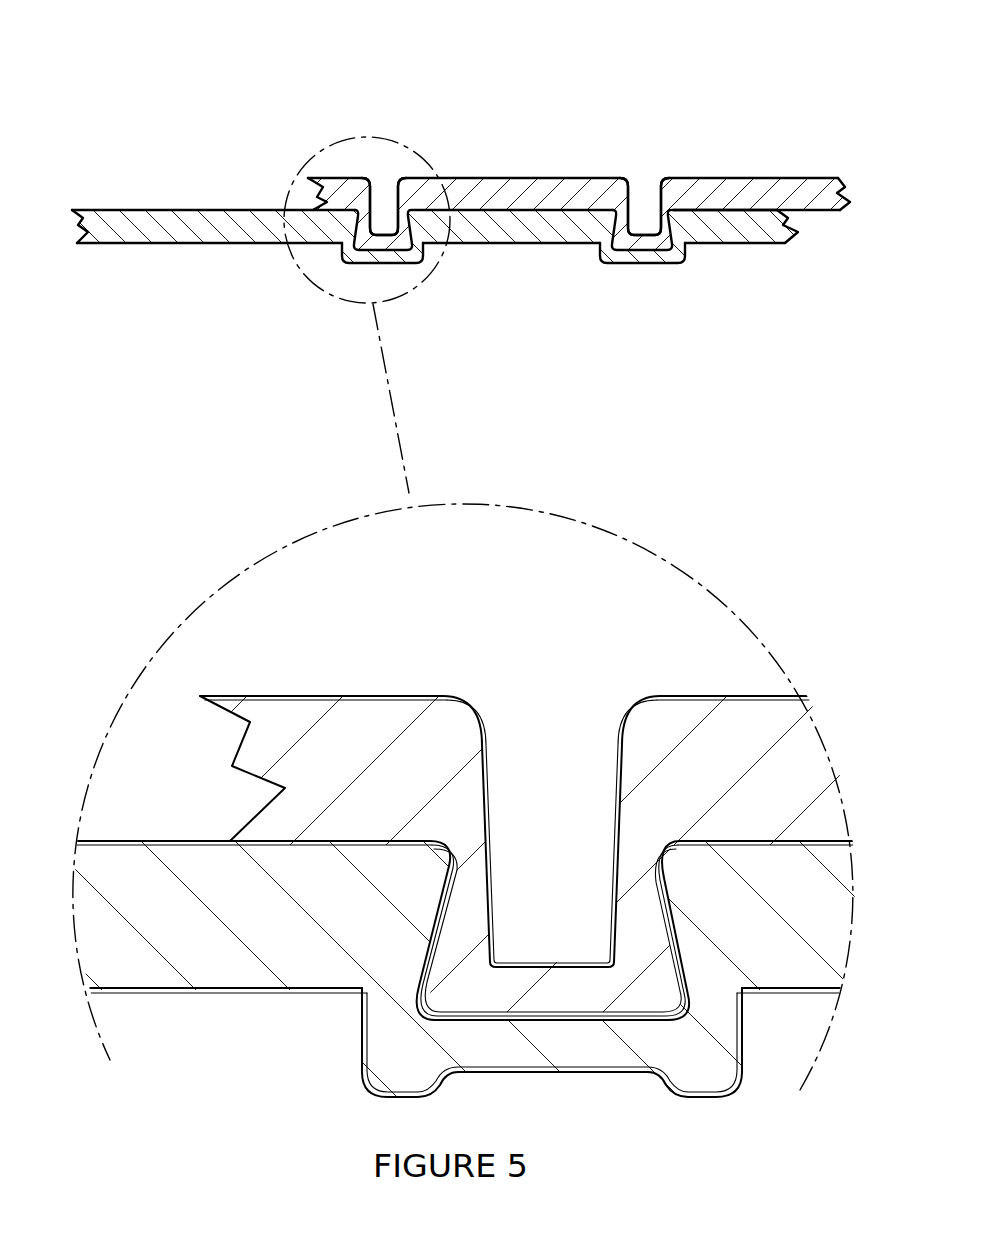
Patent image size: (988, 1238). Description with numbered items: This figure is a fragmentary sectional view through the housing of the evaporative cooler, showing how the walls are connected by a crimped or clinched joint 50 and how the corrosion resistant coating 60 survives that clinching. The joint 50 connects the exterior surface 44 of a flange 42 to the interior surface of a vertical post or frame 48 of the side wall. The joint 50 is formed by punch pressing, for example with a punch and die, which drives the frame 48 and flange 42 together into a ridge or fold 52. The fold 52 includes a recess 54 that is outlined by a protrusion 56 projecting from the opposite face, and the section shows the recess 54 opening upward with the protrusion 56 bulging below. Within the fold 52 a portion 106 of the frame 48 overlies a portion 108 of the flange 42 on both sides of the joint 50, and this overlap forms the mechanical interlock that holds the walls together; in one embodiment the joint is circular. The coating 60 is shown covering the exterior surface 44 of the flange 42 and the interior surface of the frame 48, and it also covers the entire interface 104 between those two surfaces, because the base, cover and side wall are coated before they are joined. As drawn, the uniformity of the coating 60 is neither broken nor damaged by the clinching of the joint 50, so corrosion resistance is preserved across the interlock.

The flange 42 is at (577, 195).
The exterior surface 44 is at (762, 683).
The frame 48 is at (553, 238).
The joint 50 is at (352, 110).
The fold 52 is at (352, 165).
The recess 54 is at (382, 177).
The protrusion 56 is at (410, 270).
The corrosion resistant coating 60 is at (740, 182).
The interface 104 is at (293, 198).
The portion of frame 106 is at (677, 868).
The portion of flange 108 is at (653, 993).